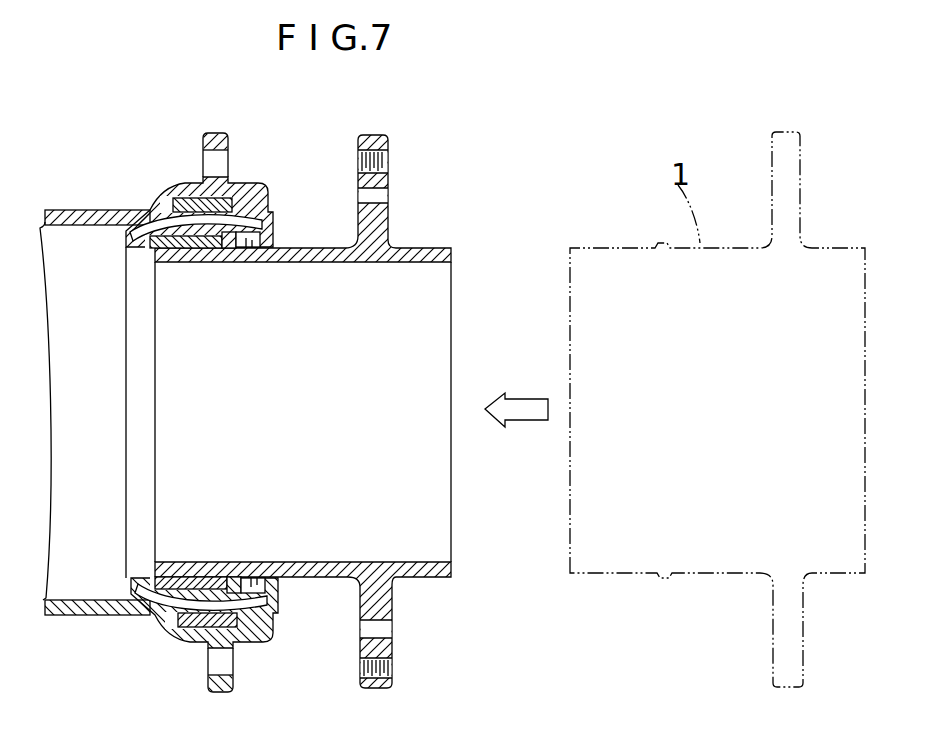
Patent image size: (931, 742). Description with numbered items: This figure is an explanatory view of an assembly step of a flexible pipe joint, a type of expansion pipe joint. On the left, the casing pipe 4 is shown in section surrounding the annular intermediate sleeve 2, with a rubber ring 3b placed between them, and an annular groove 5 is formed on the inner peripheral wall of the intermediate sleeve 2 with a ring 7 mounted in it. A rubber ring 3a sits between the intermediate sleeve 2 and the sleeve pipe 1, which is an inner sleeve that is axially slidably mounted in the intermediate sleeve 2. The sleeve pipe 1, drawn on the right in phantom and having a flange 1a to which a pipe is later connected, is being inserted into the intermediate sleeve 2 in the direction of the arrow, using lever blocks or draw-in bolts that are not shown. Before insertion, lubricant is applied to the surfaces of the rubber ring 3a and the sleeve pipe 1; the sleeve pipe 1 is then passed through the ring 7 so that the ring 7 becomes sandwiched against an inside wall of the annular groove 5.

The sleeve pipe 1 is at (307, 245).
The flange 1a is at (382, 141).
The intermediate sleeve 2 is at (167, 220).
The rubber ring 3a is at (167, 260).
The rubber ring 3b is at (197, 200).
The casing pipe 4 is at (78, 208).
The annular groove 5 is at (258, 260).
The ring 7 is at (225, 260).